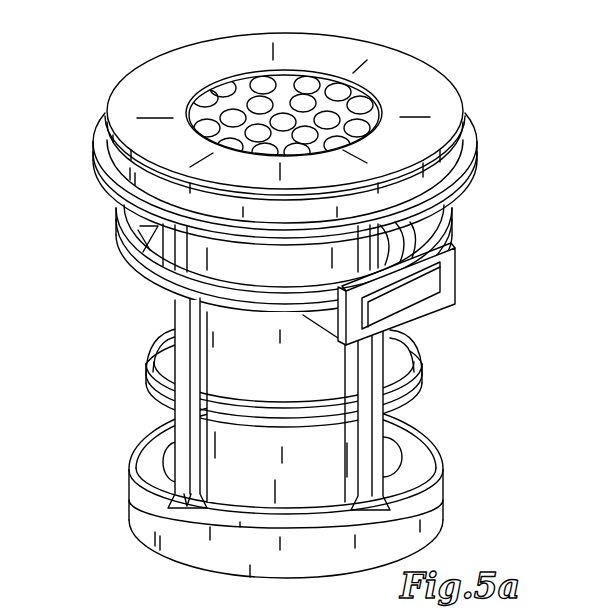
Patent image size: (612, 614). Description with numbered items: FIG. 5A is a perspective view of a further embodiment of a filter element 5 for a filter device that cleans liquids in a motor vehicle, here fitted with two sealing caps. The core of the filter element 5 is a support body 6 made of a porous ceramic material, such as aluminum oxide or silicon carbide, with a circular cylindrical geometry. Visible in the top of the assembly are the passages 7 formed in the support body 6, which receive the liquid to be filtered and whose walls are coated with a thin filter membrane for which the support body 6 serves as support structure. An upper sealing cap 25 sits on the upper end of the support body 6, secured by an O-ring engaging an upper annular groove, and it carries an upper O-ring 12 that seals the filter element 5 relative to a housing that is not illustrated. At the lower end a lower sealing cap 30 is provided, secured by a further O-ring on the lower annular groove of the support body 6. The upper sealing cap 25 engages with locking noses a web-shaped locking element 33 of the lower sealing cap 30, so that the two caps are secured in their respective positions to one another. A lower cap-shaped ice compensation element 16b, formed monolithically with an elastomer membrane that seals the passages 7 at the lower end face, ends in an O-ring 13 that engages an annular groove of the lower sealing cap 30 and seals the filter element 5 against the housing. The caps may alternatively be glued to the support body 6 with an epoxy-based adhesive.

The filter element 5 is at (320, 297).
The support body 6 is at (290, 375).
The passages 7 is at (226, 82).
The upper O-ring 12 is at (103, 147).
The O-ring 13 is at (145, 514).
The lower cap-shaped ice compensation element 16b is at (311, 487).
The upper sealing cap 25 is at (440, 97).
The lower sealing cap 30 is at (414, 438).
The web-shaped locking element 33 is at (440, 280).